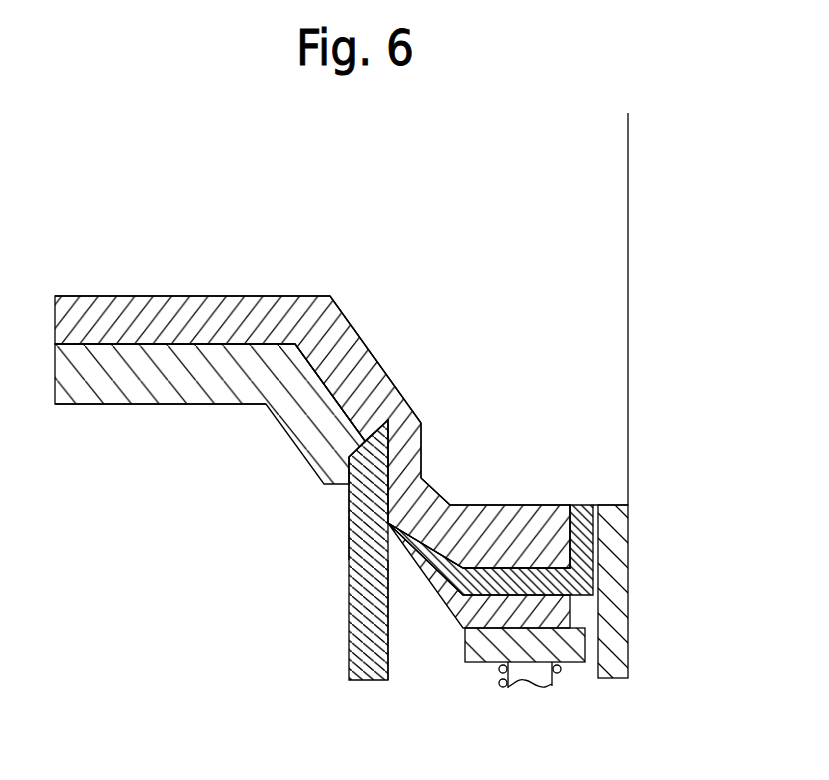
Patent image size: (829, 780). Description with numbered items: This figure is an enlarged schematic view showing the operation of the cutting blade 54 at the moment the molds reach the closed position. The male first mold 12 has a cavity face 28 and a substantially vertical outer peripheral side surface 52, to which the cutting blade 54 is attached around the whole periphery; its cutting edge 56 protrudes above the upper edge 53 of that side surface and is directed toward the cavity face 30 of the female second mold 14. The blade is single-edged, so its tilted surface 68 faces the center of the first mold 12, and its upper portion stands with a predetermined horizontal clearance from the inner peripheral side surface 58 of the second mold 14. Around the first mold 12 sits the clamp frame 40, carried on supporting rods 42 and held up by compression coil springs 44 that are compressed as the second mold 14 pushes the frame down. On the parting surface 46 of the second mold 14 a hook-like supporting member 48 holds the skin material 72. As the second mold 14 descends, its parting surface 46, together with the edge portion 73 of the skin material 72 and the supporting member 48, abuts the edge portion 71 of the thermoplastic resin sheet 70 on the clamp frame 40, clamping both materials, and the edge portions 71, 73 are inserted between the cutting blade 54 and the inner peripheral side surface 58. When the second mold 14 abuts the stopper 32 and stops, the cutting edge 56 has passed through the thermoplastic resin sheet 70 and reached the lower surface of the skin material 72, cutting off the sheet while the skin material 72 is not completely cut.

The first mold 12 is at (107, 420).
The second mold 14 is at (612, 261).
The cavity face 28 is at (244, 403).
The cavity face 30 is at (198, 296).
The stopper 32 is at (618, 593).
The clamp frame 40 is at (472, 661).
The supporting rod 42 is at (558, 688).
The compression coil spring 44 is at (502, 688).
The parting surface 46 is at (614, 510).
The supporting member 48 is at (583, 552).
The outer peripheral side surface 52 is at (350, 628).
The upper edge 53 is at (347, 487).
The cutting blade 54 is at (392, 630).
The cutting edge 56 is at (398, 410).
The inner peripheral side surface 58 is at (416, 452).
The tilted surface 68 is at (349, 457).
The thermoplastic resin sheet 70 is at (186, 380).
The edge portion 71 is at (565, 620).
The skin material 72 is at (355, 350).
The edge portion 73 is at (492, 517).